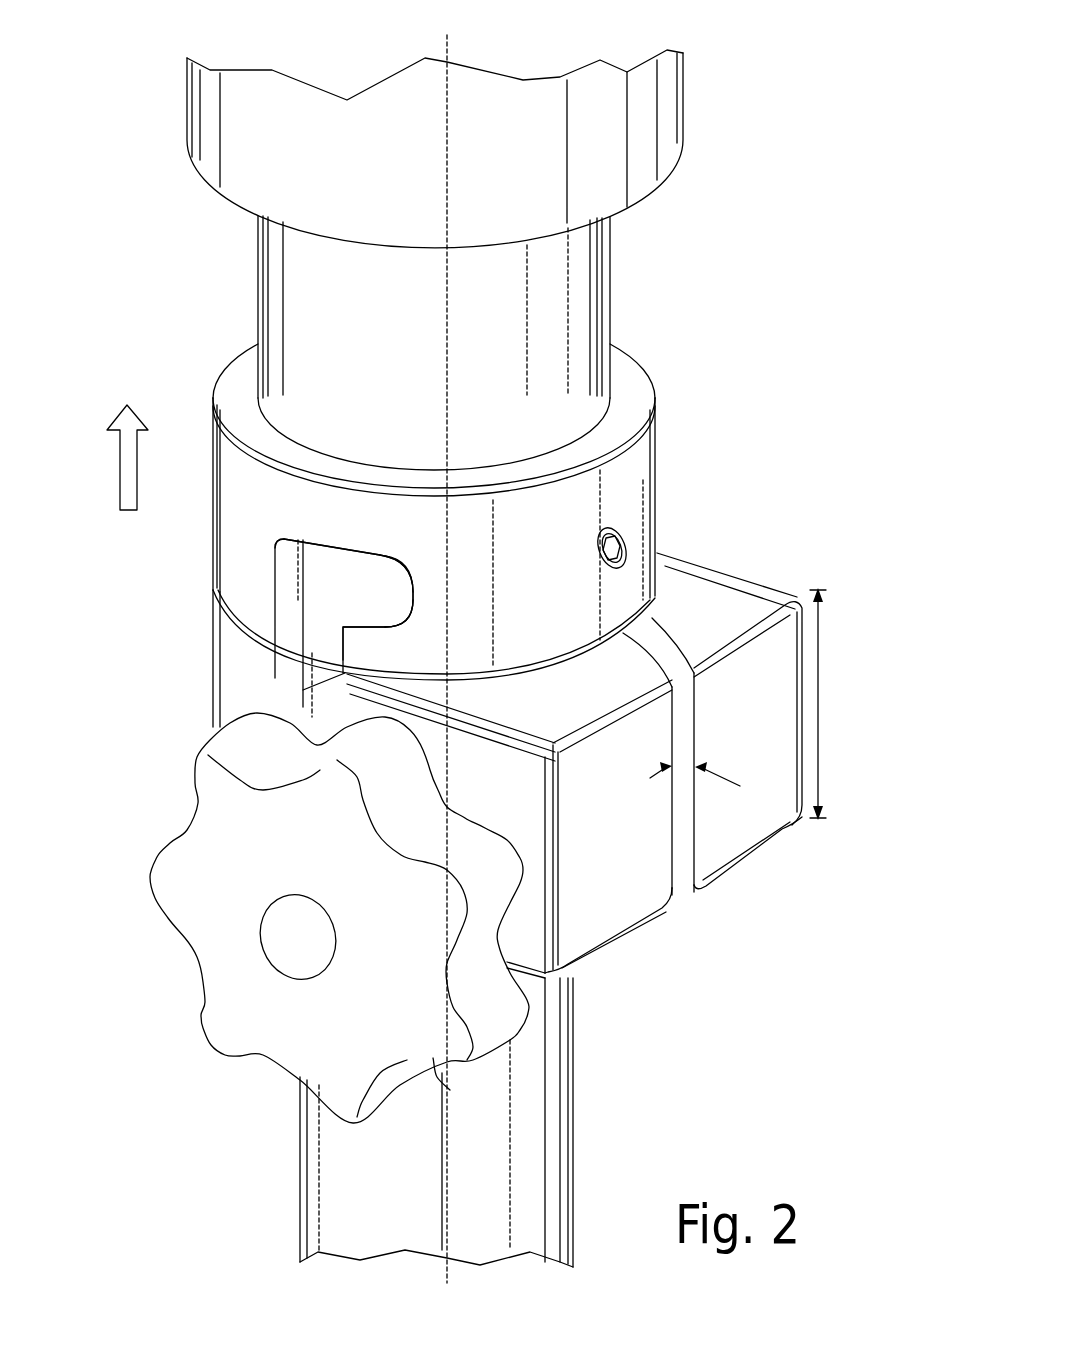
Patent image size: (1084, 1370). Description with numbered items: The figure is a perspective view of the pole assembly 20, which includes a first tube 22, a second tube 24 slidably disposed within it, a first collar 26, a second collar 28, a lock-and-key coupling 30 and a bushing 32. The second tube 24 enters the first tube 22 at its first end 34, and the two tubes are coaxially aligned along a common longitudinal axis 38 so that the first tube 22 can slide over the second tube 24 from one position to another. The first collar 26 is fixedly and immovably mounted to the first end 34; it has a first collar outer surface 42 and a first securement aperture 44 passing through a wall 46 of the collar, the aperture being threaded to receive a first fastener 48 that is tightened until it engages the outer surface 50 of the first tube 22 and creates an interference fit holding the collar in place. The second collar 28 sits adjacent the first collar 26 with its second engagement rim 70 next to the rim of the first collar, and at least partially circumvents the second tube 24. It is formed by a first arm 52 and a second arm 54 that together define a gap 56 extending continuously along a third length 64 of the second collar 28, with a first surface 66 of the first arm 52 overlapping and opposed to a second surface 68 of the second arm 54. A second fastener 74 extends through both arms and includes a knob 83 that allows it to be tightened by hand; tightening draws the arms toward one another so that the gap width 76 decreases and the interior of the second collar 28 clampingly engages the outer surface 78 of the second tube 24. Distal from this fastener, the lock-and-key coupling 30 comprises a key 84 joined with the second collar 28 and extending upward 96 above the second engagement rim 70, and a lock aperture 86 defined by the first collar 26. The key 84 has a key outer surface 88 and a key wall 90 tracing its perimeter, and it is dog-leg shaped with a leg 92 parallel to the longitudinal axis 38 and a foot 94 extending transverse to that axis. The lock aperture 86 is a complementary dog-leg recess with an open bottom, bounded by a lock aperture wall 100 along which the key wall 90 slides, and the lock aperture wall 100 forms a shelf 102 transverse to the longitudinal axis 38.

The pole assembly 20 is at (843, 162).
The first tube 22 is at (602, 292).
The second tube 24 is at (562, 1118).
The first collar 26 is at (652, 456).
The second collar 28 is at (230, 688).
The lock-and-key coupling 30 is at (246, 525).
The bushing 32 is at (712, 597).
The first end 34 is at (870, 578).
The common longitudinal axis 38 is at (452, 46).
The first collar outer surface 42 is at (518, 552).
The first securement aperture 44 is at (628, 545).
The wall 46 is at (242, 385).
The first fastener 48 is at (618, 530).
The outer surface 50 is at (353, 362).
The first arm 52 is at (618, 915).
The second arm 54 is at (750, 835).
The gap 56 is at (680, 885).
The third length 64 is at (822, 706).
The first surface 66 is at (643, 665).
The second surface 68 is at (683, 690).
The second engagement rim 70 is at (218, 606).
The second fastener 74 is at (205, 1096).
The gap width 76 is at (706, 770).
The outer surface 78 is at (358, 1187).
The knob 83 is at (173, 885).
The key 84 is at (355, 573).
The lock aperture 86 is at (413, 618).
The key outer surface 88 is at (407, 565).
The key wall 90 is at (290, 540).
The leg 92 is at (310, 593).
The foot 94 is at (388, 593).
The upward 96 is at (120, 468).
The lock aperture wall 100 is at (347, 552).
The shelf 102 is at (360, 630).